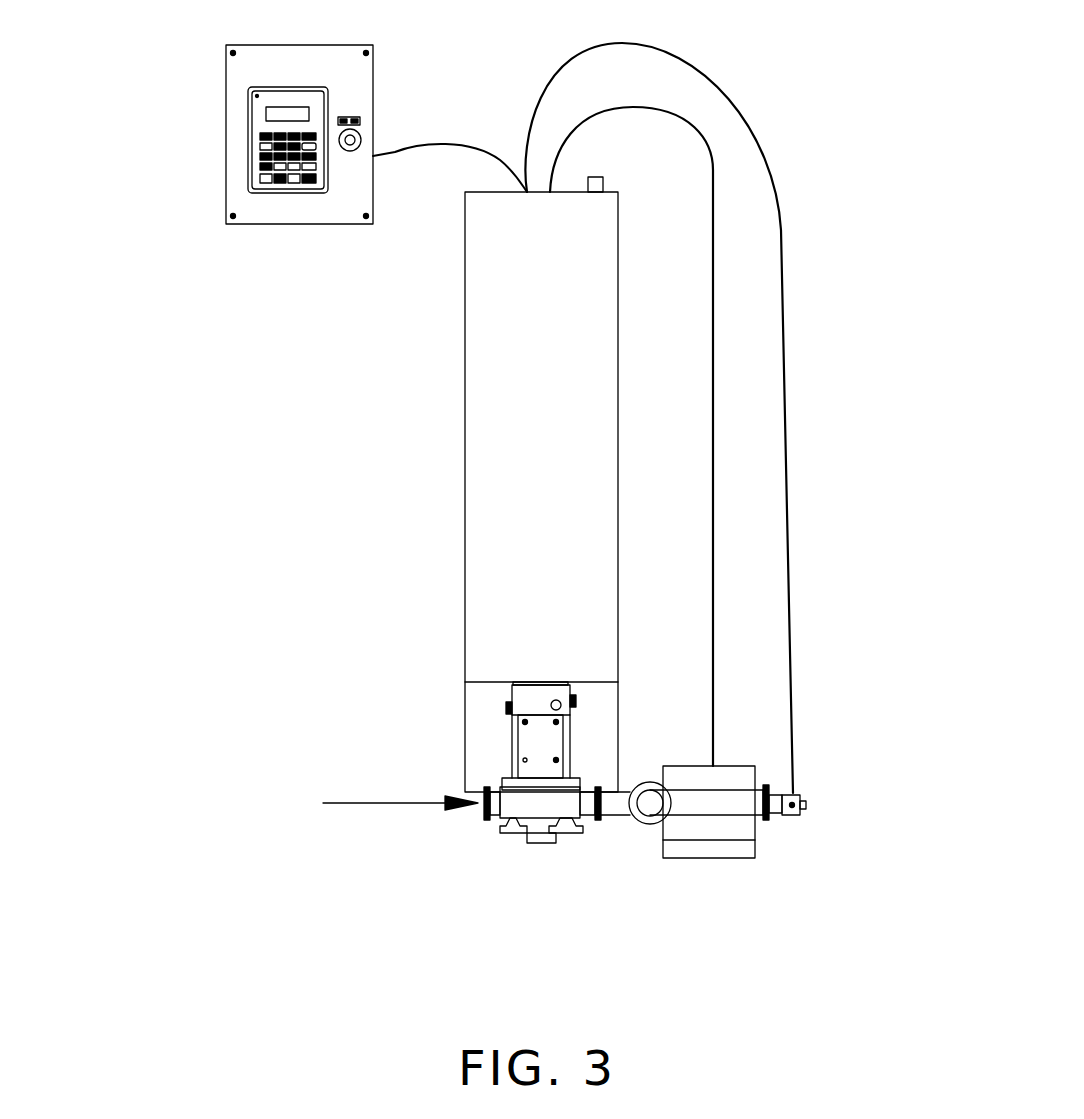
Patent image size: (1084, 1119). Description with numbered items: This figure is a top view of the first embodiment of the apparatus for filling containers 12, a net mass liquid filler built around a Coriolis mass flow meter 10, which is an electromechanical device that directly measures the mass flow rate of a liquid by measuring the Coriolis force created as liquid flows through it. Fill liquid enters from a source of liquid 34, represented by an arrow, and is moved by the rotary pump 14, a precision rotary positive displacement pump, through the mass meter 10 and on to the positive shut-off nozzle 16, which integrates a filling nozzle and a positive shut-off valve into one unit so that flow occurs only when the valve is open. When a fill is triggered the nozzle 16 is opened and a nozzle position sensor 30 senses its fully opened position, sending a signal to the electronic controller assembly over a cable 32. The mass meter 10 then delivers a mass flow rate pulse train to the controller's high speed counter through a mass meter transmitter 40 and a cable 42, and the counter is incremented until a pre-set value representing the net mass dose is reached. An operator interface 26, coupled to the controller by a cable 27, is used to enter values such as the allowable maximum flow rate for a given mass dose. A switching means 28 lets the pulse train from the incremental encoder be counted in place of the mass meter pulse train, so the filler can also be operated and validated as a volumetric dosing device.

The Coriolis mass flow meter 10 is at (640, 817).
The apparatus for filling containers 12 is at (196, 746).
The rotary pump 14 is at (547, 835).
The positive shut-off nozzle 16 is at (793, 793).
The operator interface 26 is at (240, 153).
The cable 27 is at (392, 152).
The switching means 28 is at (604, 179).
The nozzle position sensor 30 is at (808, 806).
The cable 32 is at (787, 298).
The source of liquid 34 is at (398, 803).
The mass meter transmitter 40 is at (727, 766).
The cable 42 is at (711, 342).